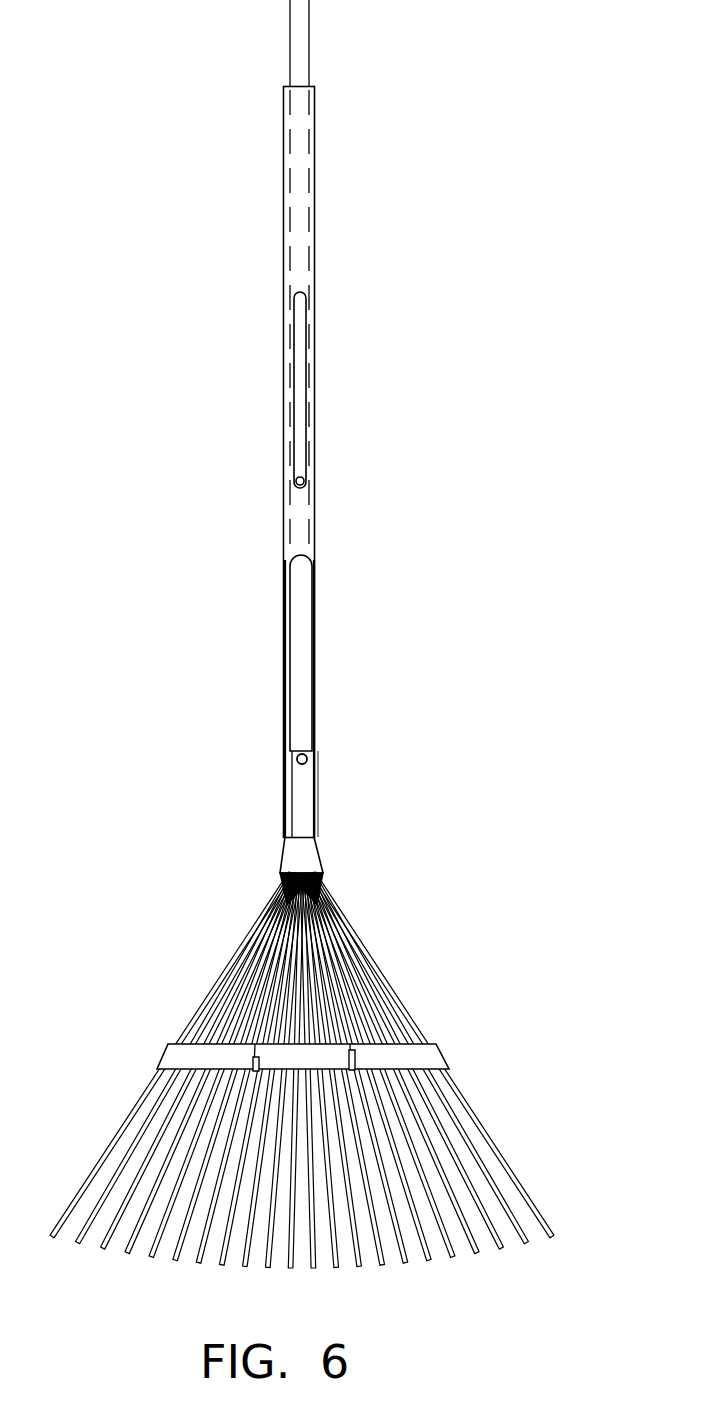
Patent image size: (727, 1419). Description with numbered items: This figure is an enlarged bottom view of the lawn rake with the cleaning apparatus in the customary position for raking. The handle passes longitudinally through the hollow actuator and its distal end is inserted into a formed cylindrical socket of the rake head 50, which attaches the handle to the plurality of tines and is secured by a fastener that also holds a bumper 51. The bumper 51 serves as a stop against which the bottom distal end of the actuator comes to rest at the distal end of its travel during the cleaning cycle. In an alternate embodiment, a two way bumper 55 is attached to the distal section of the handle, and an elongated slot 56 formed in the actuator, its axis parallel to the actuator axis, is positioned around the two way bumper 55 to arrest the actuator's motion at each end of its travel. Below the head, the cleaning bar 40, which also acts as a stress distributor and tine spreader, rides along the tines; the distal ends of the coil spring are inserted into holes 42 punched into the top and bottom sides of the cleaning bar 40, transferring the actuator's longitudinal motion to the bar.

The cleaning bar 40 is at (450, 1055).
The holes punched into the cleaning bar 42 is at (259, 1057).
The rake head 50 is at (323, 857).
The bumper 51 is at (315, 760).
The two way bumper 55 is at (305, 481).
The elongated slot 56 is at (313, 360).